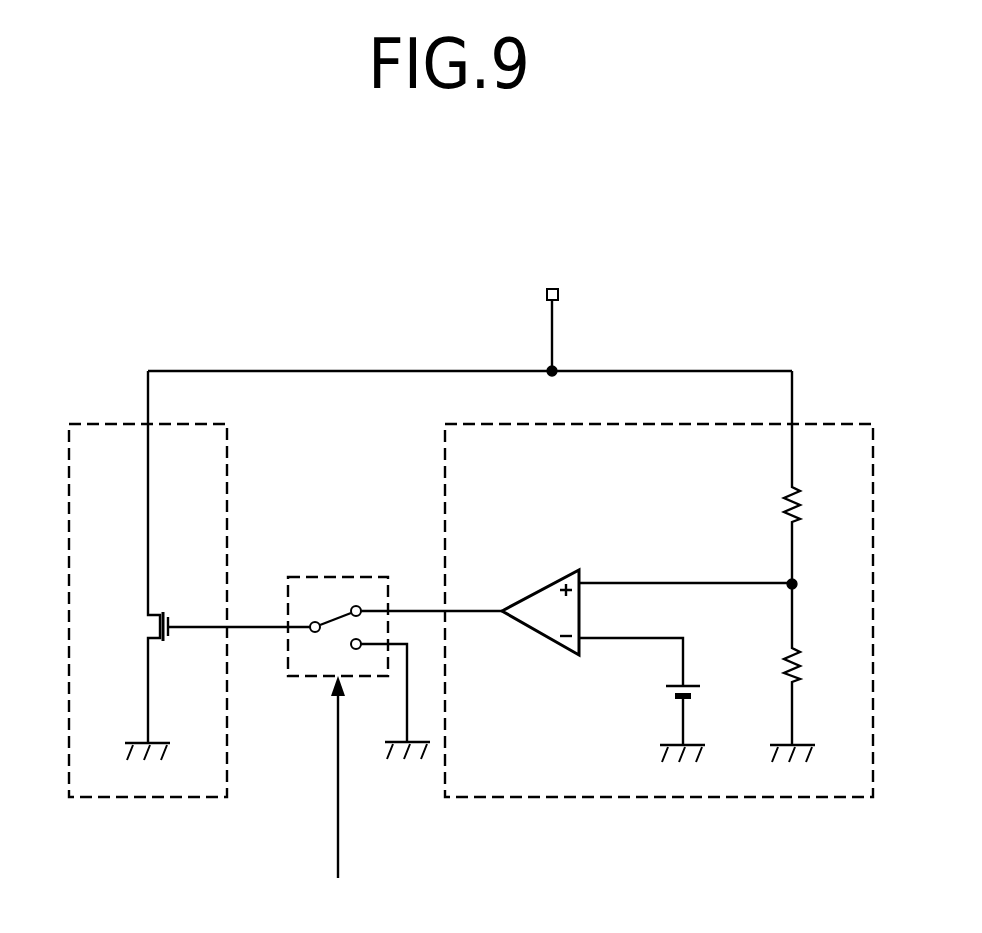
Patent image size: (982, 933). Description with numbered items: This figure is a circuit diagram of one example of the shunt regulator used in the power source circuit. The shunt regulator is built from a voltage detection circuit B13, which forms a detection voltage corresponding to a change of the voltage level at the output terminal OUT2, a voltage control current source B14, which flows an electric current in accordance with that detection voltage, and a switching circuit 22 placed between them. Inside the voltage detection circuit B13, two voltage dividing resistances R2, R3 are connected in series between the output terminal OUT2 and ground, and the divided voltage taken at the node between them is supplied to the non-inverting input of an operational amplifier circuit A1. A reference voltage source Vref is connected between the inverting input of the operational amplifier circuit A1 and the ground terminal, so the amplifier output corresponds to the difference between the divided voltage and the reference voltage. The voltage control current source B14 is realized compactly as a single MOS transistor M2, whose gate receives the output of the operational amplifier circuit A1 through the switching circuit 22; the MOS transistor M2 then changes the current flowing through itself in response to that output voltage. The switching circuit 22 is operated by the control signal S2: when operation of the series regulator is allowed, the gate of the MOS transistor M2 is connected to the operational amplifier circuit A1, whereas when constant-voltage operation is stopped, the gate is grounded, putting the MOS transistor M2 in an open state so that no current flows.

The output terminal OUT2 is at (557, 288).
The voltage control current source B14 is at (112, 422).
The MOS transistor M2 is at (153, 627).
The switching circuit 22 is at (340, 577).
The control signal S2 is at (338, 797).
The voltage detection circuit B13 is at (832, 423).
The operational amplifier circuit A1 is at (540, 636).
The reference voltage source Vref is at (656, 720).
The voltage dividing resistance R2 is at (811, 477).
The voltage dividing resistance R3 is at (804, 673).